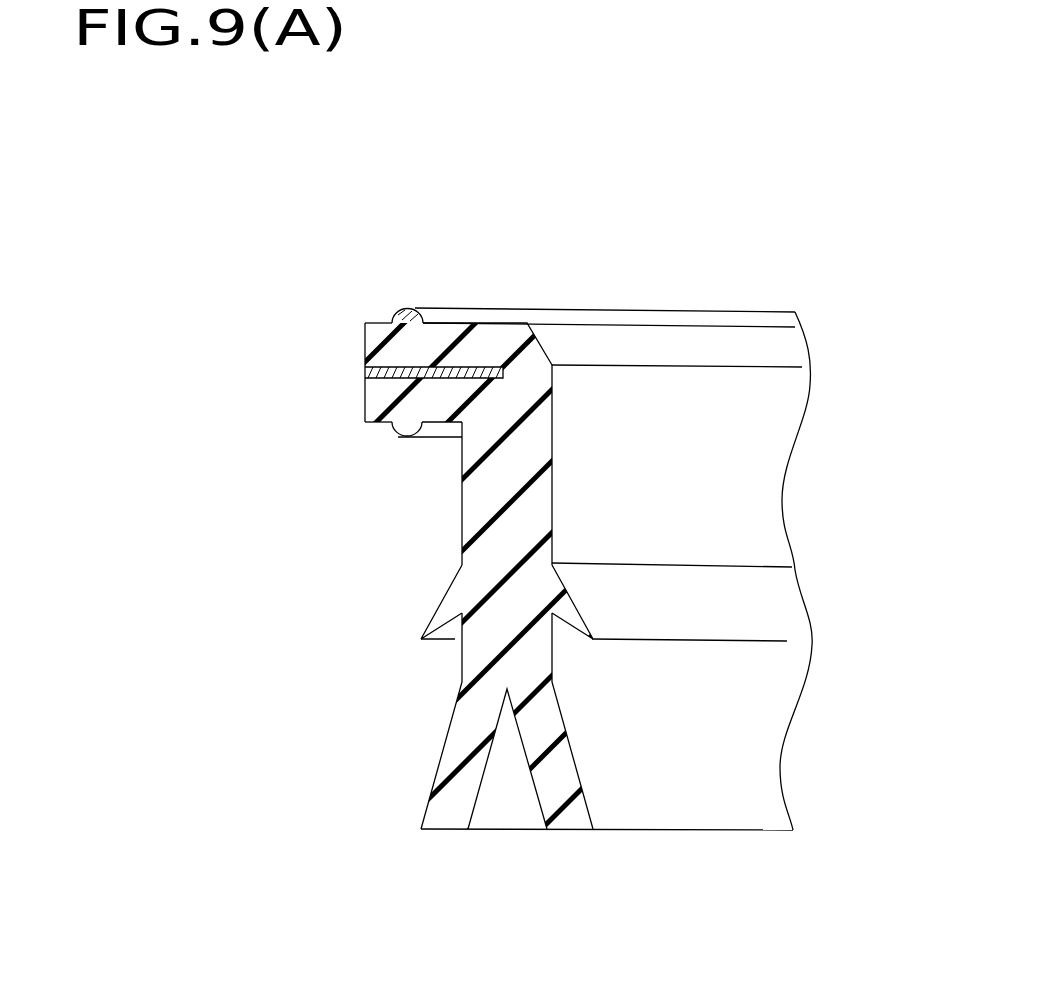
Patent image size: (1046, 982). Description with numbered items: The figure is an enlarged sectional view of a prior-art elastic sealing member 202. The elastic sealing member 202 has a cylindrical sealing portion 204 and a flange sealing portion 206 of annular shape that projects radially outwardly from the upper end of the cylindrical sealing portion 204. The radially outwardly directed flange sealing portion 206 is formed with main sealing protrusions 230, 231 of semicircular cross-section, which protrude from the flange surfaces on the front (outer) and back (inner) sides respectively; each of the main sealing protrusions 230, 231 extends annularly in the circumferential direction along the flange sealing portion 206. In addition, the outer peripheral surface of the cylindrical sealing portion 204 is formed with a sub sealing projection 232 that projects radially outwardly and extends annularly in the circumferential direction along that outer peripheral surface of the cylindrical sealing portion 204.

The elastic sealing member 202 is at (663, 278).
The cylindrical sealing portion 204 is at (537, 505).
The flange sealing portion 206 is at (486, 345).
The main sealing protrusion 230 is at (402, 307).
The main sealing protrusion 231 is at (405, 430).
The sub sealing projection 232 is at (442, 613).